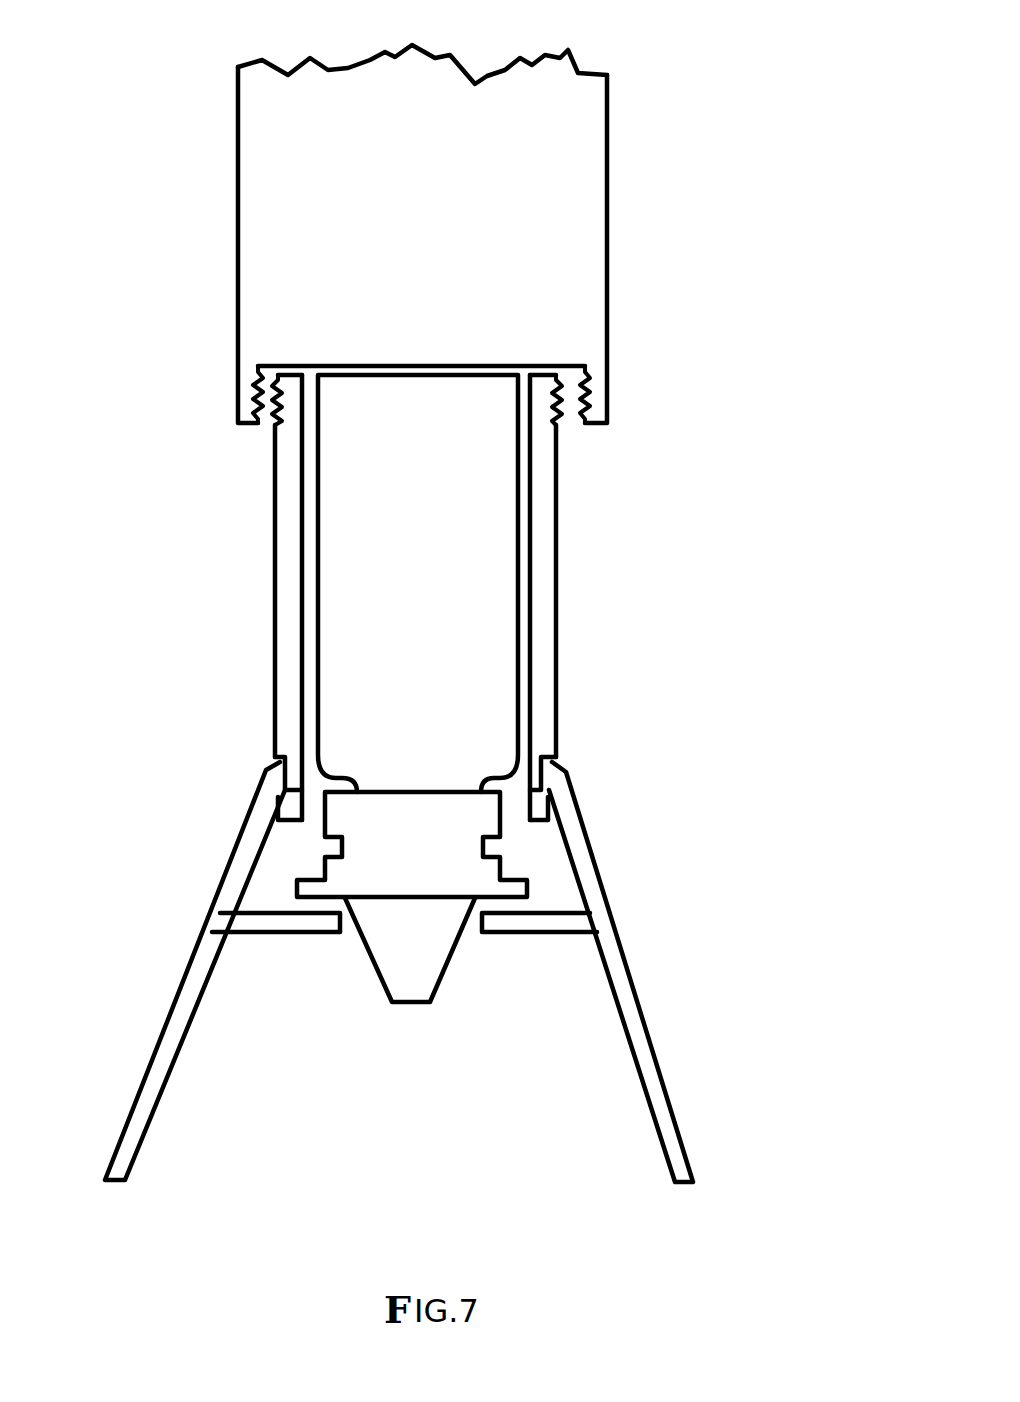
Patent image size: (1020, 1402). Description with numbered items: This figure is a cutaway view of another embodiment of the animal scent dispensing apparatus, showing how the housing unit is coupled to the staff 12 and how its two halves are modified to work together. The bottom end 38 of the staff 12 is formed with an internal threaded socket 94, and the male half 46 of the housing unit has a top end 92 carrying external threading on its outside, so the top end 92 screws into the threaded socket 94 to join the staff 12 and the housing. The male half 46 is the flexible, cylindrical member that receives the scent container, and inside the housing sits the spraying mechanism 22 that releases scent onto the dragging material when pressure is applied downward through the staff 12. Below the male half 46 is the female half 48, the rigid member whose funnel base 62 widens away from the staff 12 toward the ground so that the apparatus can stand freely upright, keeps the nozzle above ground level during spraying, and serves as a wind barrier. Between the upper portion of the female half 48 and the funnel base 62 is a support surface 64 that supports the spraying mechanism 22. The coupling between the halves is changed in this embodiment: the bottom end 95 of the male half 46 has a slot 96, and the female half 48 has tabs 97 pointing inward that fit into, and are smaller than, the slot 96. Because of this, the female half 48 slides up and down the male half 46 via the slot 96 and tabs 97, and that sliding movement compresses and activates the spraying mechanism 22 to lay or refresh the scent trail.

The staff 12 is at (585, 50).
The bottom end of the staff 38 is at (608, 222).
The internal threaded socket 94 is at (588, 370).
The top end of the male half 92 is at (565, 428).
The male half 46 is at (558, 610).
The bottom end of the male half 95 is at (556, 712).
The slot 96 is at (557, 762).
The tabs 97 is at (258, 760).
The spraying mechanism 22 is at (475, 812).
The female half 48 is at (612, 884).
The funnel base 62 is at (655, 1050).
The support surface 64 is at (510, 933).